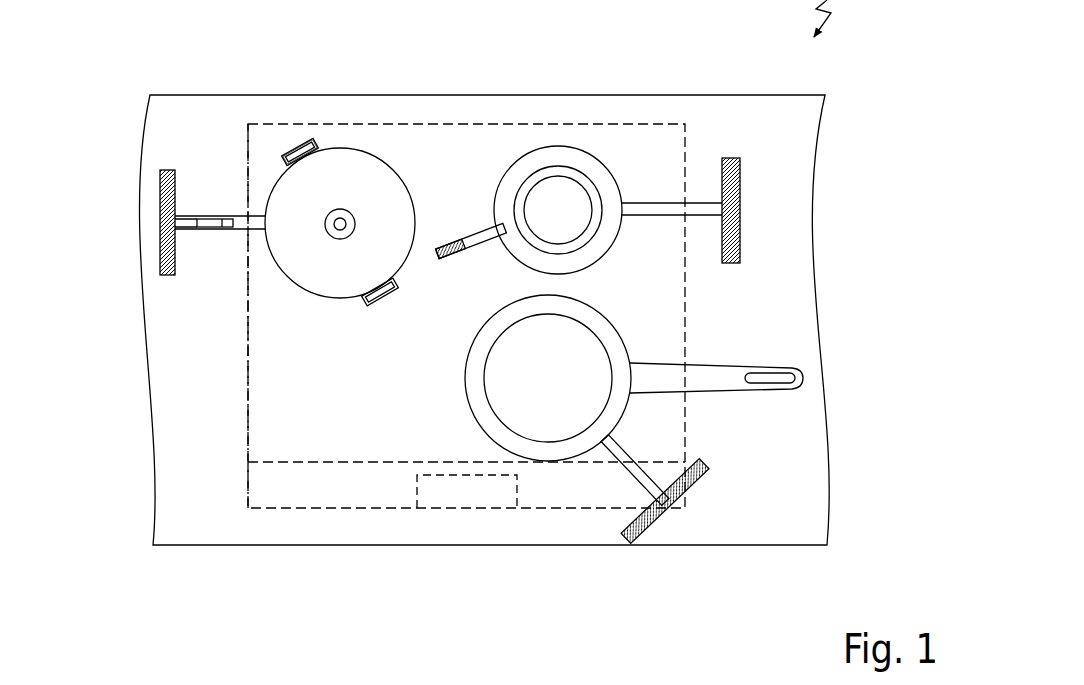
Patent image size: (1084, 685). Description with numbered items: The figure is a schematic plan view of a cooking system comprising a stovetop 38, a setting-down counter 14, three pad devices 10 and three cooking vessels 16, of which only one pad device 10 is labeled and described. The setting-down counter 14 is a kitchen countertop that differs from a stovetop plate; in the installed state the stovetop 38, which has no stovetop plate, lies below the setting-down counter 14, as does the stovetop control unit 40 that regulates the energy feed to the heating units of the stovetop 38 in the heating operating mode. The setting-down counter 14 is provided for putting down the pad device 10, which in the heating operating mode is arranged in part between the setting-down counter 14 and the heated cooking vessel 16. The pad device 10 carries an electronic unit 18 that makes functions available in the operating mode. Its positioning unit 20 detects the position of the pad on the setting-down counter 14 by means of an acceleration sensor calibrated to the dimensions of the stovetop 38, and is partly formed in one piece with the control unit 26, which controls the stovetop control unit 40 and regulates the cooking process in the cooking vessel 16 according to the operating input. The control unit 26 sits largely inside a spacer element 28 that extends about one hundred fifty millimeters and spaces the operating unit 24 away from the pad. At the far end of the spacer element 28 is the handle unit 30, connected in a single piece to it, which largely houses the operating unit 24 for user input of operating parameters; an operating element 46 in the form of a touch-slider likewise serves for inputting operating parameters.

The pad device 10 is at (286, 142).
The setting-down counter 14 is at (715, 125).
The cooking vessel 16 is at (370, 180).
The electronic unit 18 is at (120, 167).
The positioning unit 20 is at (161, 325).
The operating unit 24 is at (150, 230).
The control unit 26 is at (212, 232).
The spacer element 28 is at (232, 215).
The handle unit 30 is at (166, 170).
The stovetop 38 is at (508, 123).
The stovetop control unit 40 is at (475, 488).
The operating element 46 is at (158, 228).